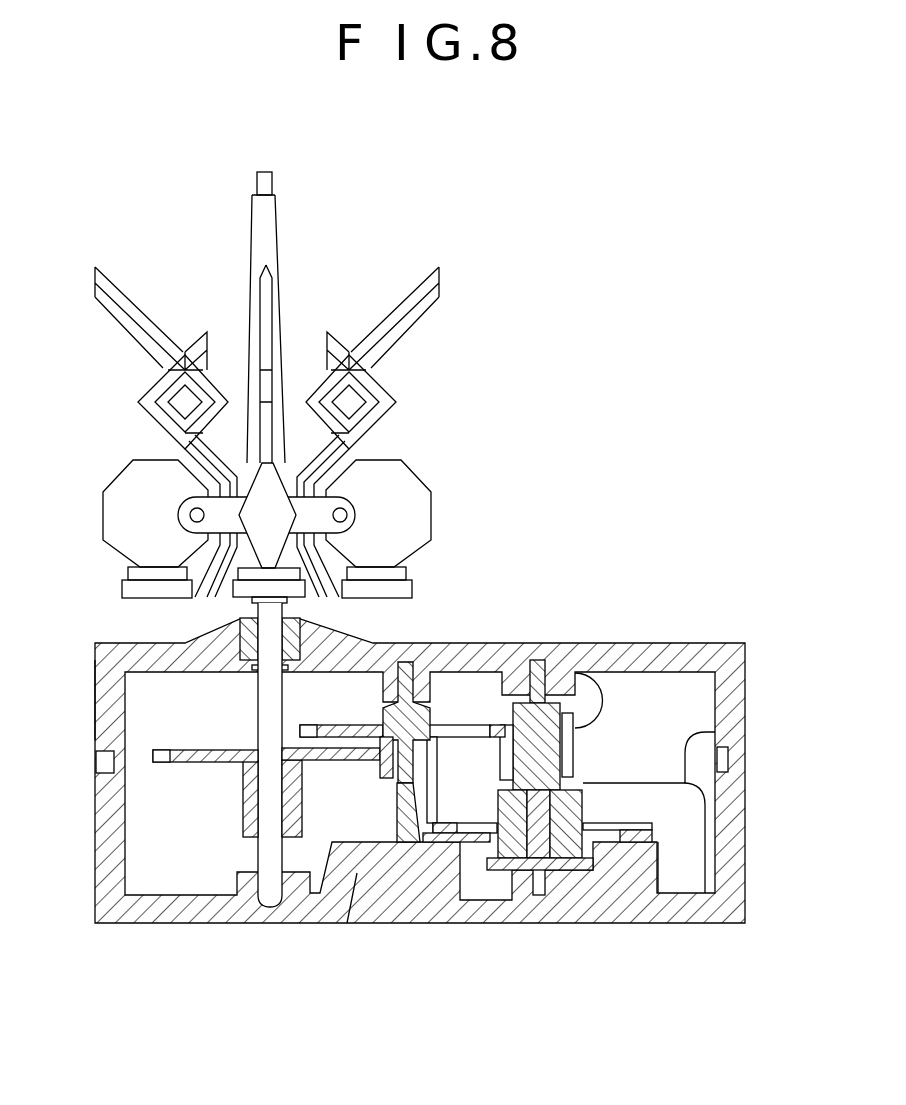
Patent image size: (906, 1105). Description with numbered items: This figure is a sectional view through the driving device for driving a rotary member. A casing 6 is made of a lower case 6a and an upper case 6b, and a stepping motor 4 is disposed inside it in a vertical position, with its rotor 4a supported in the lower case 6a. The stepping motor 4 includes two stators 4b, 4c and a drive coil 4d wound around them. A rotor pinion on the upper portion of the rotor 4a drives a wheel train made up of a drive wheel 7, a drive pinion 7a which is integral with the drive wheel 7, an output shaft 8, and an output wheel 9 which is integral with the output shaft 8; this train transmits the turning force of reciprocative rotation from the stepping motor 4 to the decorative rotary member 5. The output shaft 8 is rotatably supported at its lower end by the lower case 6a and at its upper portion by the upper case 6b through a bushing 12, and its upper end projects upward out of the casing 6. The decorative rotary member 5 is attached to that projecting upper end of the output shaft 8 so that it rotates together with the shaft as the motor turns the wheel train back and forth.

The stepping motor 4 is at (665, 728).
The rotor 4a is at (587, 773).
The stator 4b is at (643, 825).
The stator 4c is at (597, 685).
The drive coil 4d is at (727, 727).
The decorative rotary member 5 is at (388, 390).
The casing 6 is at (414, 762).
The lower case 6a is at (97, 775).
The upper case 6b is at (100, 700).
The drive wheel 7 is at (457, 723).
The drive pinion 7a is at (383, 778).
The output shaft 8 is at (262, 692).
The output wheel 9 is at (190, 765).
The bushing 12 is at (238, 618).